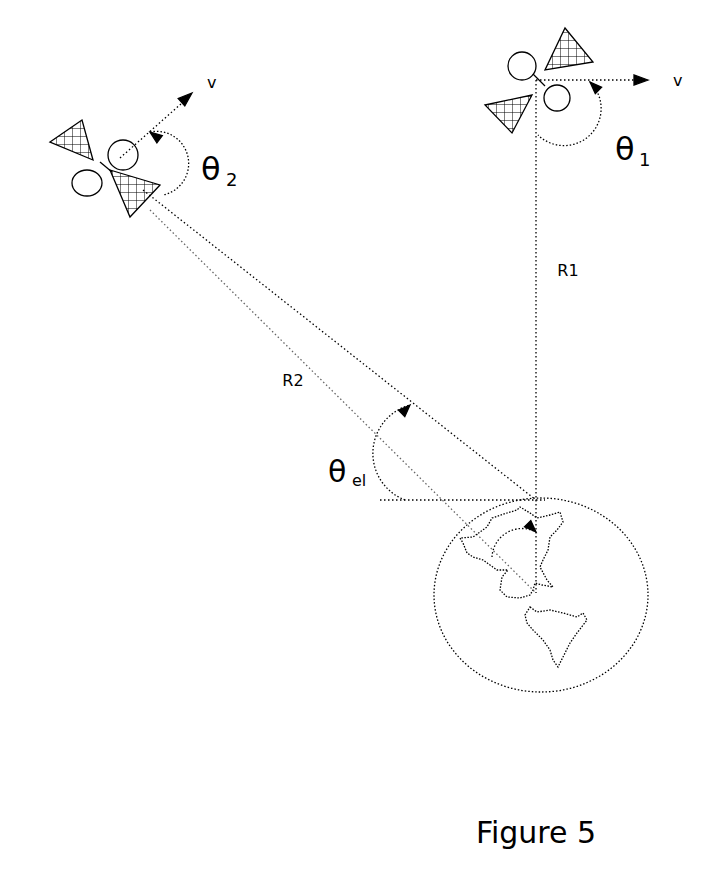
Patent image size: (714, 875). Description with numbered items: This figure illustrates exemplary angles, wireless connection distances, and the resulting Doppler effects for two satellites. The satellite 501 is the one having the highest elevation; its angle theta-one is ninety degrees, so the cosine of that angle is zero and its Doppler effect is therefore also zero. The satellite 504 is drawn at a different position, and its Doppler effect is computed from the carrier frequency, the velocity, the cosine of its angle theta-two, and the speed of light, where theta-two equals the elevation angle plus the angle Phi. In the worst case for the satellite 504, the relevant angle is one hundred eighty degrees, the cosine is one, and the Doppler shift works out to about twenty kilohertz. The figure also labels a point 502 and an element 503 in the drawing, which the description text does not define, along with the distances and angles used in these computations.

The satellite 501 is at (521, 80).
The sub-satellite point 502 is at (492, 483).
The earth 503 is at (541, 595).
The satellite 504 is at (89, 168).